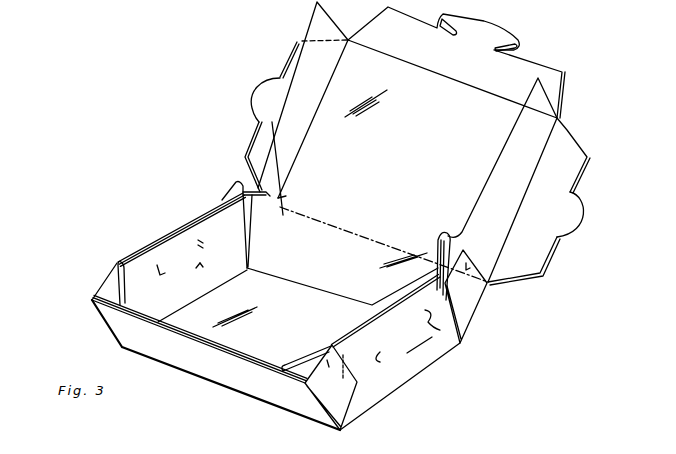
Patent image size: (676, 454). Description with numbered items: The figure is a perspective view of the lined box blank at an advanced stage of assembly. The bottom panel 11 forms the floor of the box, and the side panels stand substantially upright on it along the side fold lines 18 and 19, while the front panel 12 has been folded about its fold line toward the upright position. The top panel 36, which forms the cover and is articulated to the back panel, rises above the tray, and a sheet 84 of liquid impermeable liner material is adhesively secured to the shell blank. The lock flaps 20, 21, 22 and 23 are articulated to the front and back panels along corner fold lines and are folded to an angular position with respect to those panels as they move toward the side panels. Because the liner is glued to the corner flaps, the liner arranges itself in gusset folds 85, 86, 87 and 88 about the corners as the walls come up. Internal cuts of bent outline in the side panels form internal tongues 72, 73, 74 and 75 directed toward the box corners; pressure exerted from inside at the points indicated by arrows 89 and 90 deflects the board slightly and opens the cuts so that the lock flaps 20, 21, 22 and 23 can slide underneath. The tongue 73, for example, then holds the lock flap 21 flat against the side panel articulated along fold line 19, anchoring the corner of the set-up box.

The bottom panel 11 is at (289, 323).
The front panel 12 is at (219, 372).
The side fold line 18 is at (218, 288).
The side fold line 19 is at (395, 385).
The lock flap 20 is at (96, 288).
The lock flap 21 is at (341, 396).
The lock flap 22 is at (236, 183).
The lock flap 23 is at (473, 296).
The top panel 36 is at (409, 161).
The internal tongue 72 is at (166, 268).
The internal tongue 73 is at (387, 348).
The internal tongue 74 is at (198, 245).
The internal tongue 75 is at (432, 326).
The sheet of liquid impermeable liner material 84 is at (322, 22).
The gusset fold 85 is at (122, 303).
The gusset fold 86 is at (285, 364).
The gusset fold 87 is at (286, 196).
The gusset fold 88 is at (439, 236).
The arrow 89 is at (165, 273).
The arrow 90 is at (203, 249).